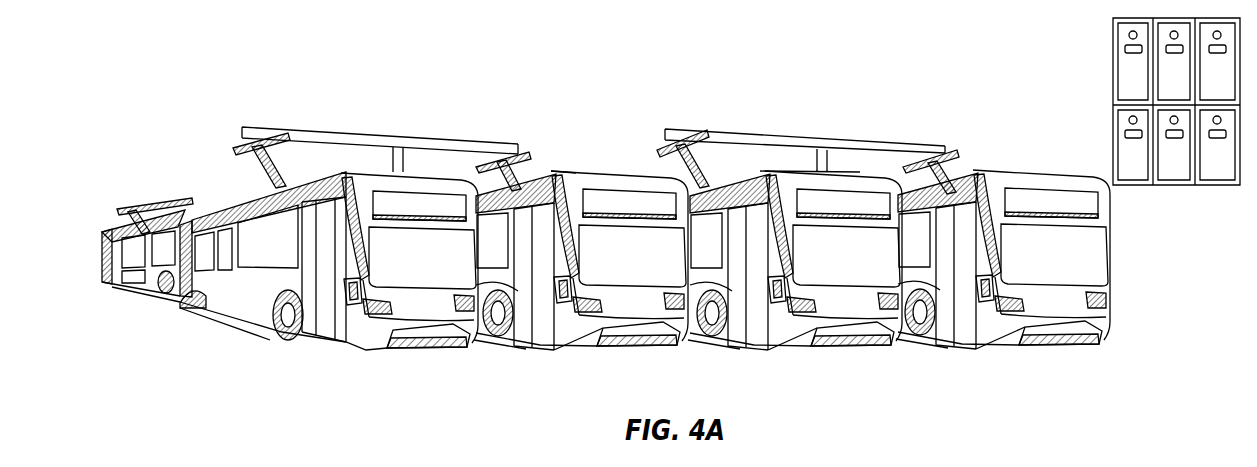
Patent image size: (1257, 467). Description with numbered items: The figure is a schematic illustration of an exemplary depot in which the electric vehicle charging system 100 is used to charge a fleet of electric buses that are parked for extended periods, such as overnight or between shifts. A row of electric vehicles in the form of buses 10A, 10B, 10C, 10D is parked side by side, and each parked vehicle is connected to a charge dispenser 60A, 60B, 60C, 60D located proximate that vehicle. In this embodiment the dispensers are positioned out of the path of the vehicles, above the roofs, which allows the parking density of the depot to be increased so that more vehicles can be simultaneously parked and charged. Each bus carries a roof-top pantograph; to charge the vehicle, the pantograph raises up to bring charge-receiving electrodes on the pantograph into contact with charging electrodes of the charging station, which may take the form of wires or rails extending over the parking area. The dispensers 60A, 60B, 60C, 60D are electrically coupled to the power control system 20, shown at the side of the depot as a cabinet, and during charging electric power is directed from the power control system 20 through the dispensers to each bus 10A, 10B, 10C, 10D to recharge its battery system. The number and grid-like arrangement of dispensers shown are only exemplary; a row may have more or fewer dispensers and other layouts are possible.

The electric vehicle charging system 100 is at (193, 361).
The bus 10A is at (279, 343).
The bus 10B is at (531, 353).
The electric vehicle 10C is at (753, 353).
The electric bus 10D is at (960, 353).
The charge dispenser 60A is at (247, 180).
The charge dispenser 60B is at (535, 156).
The charge dispenser 60C is at (690, 122).
The charge dispenser 60D is at (949, 152).
The power control system 20 is at (1096, 64).